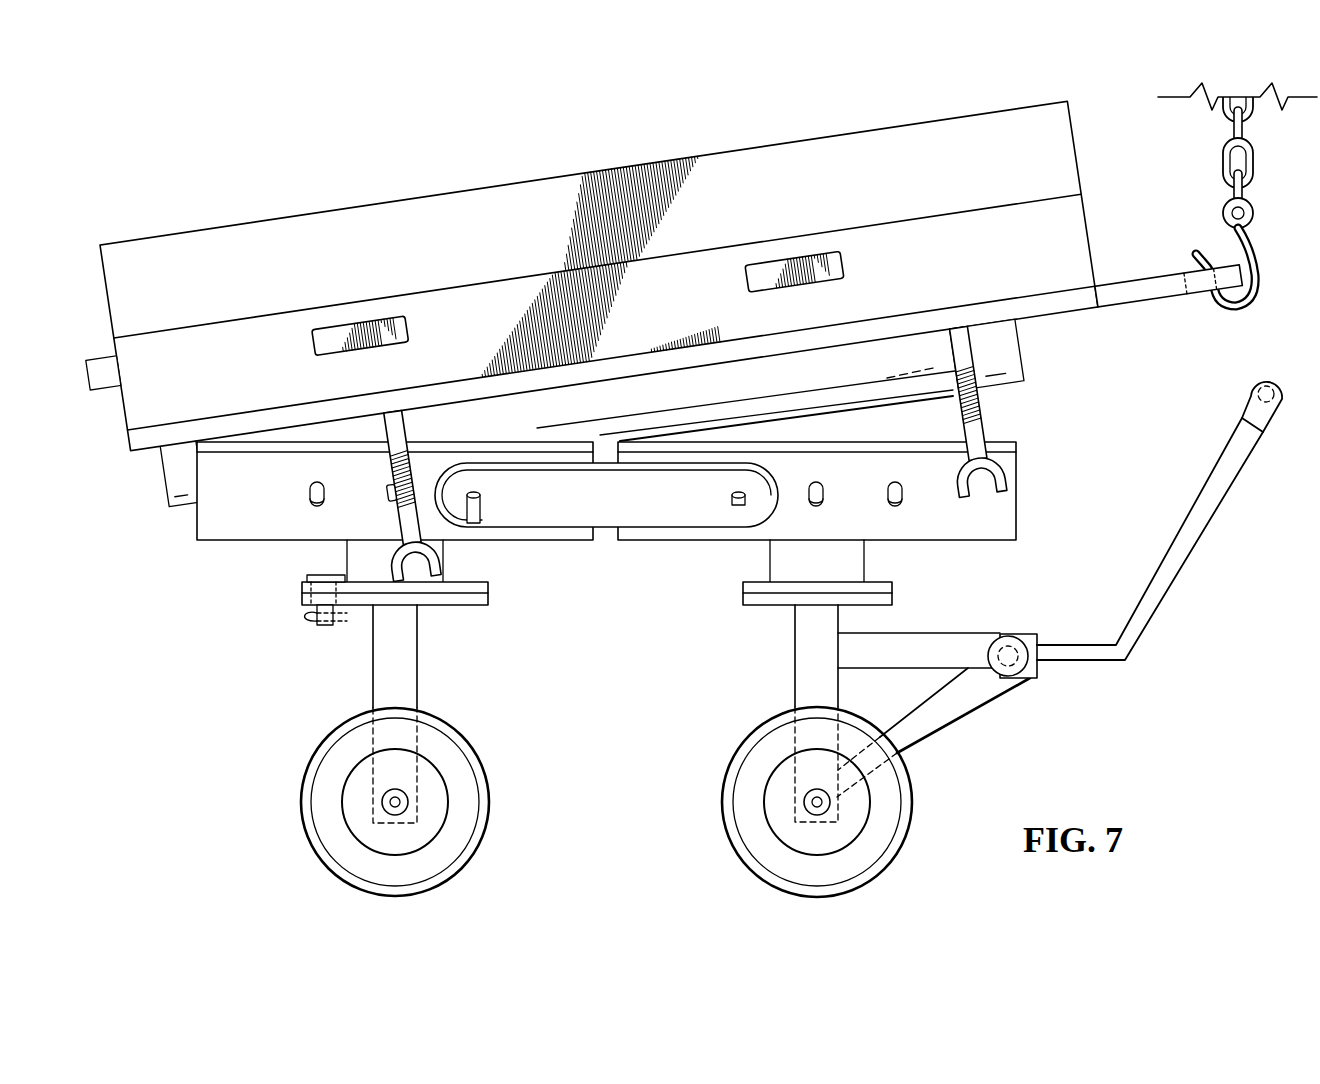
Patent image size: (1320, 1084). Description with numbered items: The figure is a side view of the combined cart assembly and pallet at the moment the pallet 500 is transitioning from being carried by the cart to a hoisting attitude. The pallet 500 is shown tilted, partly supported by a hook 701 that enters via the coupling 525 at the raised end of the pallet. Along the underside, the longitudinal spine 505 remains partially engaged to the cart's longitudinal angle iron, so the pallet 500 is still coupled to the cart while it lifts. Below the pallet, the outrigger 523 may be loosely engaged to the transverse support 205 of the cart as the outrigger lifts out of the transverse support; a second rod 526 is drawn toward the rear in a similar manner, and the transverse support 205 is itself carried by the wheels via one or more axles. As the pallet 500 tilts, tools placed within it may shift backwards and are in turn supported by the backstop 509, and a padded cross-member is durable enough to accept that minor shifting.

The pallet 500 is at (583, 171).
The backstop 509 is at (115, 411).
The longitudinal spine 505 is at (1015, 350).
The outrigger 523 is at (397, 530).
The threaded rod 526 is at (987, 428).
The coupling 525 is at (1150, 301).
The hook 701 is at (1233, 310).
The transverse support 205 is at (373, 672).